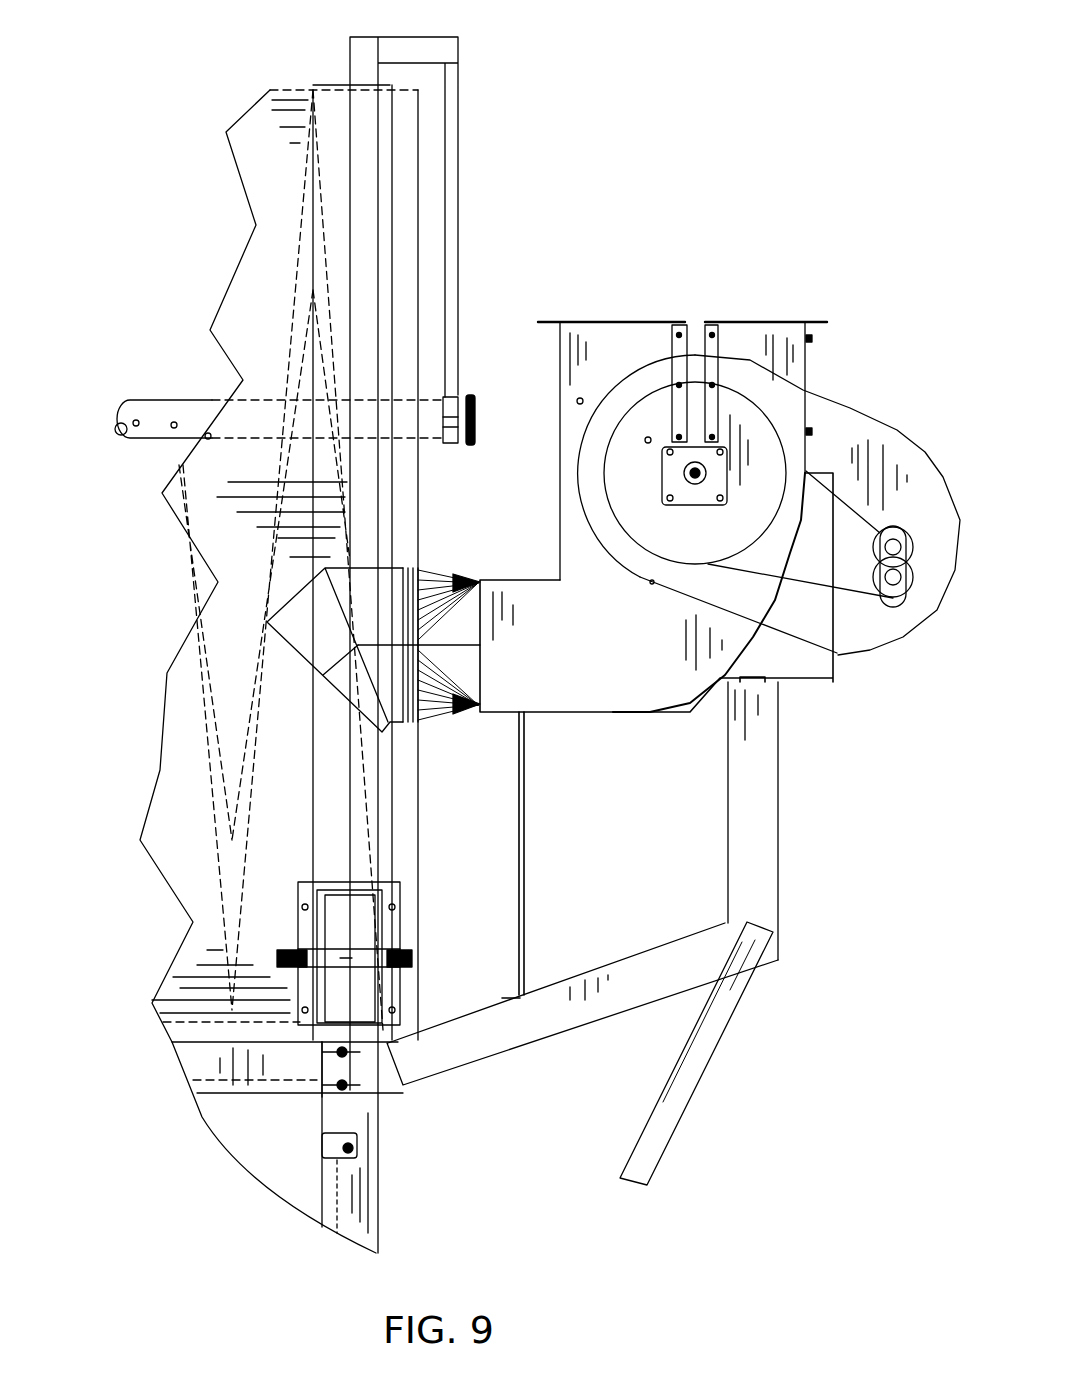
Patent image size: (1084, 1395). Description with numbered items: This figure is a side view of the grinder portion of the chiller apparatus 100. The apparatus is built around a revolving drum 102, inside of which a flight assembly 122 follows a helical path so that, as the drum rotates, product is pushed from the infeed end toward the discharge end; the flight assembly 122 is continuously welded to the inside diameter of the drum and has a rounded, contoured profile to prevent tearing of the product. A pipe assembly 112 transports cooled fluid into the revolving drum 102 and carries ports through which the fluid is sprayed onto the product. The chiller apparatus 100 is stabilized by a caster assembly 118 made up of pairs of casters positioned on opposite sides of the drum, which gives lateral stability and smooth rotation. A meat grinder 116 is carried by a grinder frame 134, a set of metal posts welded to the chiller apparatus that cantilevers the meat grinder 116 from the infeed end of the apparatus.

The chiller apparatus 100 is at (532, 193).
The revolving drum 102 is at (268, 132).
The pipe assembly 112 is at (183, 400).
The meat grinder 116 is at (595, 320).
The caster assembly 118 is at (398, 1057).
The flight assembly 122 is at (232, 840).
The grinder frame 134 is at (767, 892).